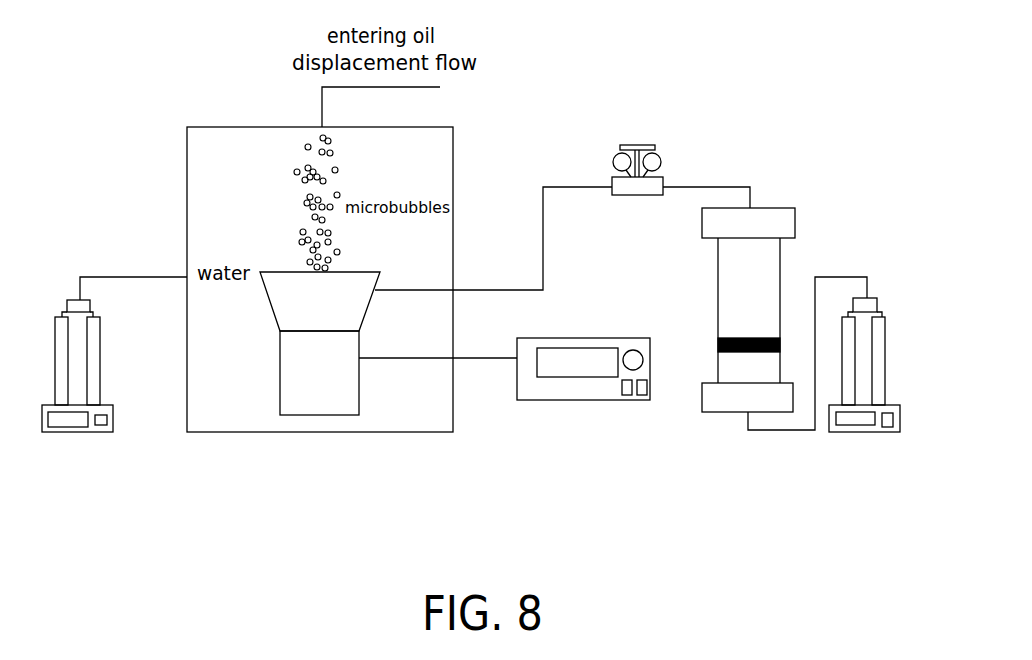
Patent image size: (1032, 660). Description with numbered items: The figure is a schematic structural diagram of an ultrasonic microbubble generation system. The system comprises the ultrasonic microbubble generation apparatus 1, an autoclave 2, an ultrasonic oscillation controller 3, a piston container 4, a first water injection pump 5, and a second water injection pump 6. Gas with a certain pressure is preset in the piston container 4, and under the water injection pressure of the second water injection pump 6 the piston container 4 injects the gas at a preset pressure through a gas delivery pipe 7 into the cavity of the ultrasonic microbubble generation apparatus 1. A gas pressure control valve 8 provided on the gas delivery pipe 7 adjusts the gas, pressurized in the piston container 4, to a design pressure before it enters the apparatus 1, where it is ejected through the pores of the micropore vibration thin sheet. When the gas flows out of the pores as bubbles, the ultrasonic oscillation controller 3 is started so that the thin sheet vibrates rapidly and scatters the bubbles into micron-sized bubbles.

The ultrasonic microbubble generation apparatus 1 is at (345, 314).
The autoclave 2 is at (300, 308).
The ultrasonic oscillation controller 3 is at (504, 415).
The piston container 4 is at (736, 349).
The first water injection pump 5 is at (111, 383).
The second water injection pump 6 is at (863, 394).
The gas delivery pipe 7 is at (493, 190).
The gas pressure control valve 8 is at (720, 127).